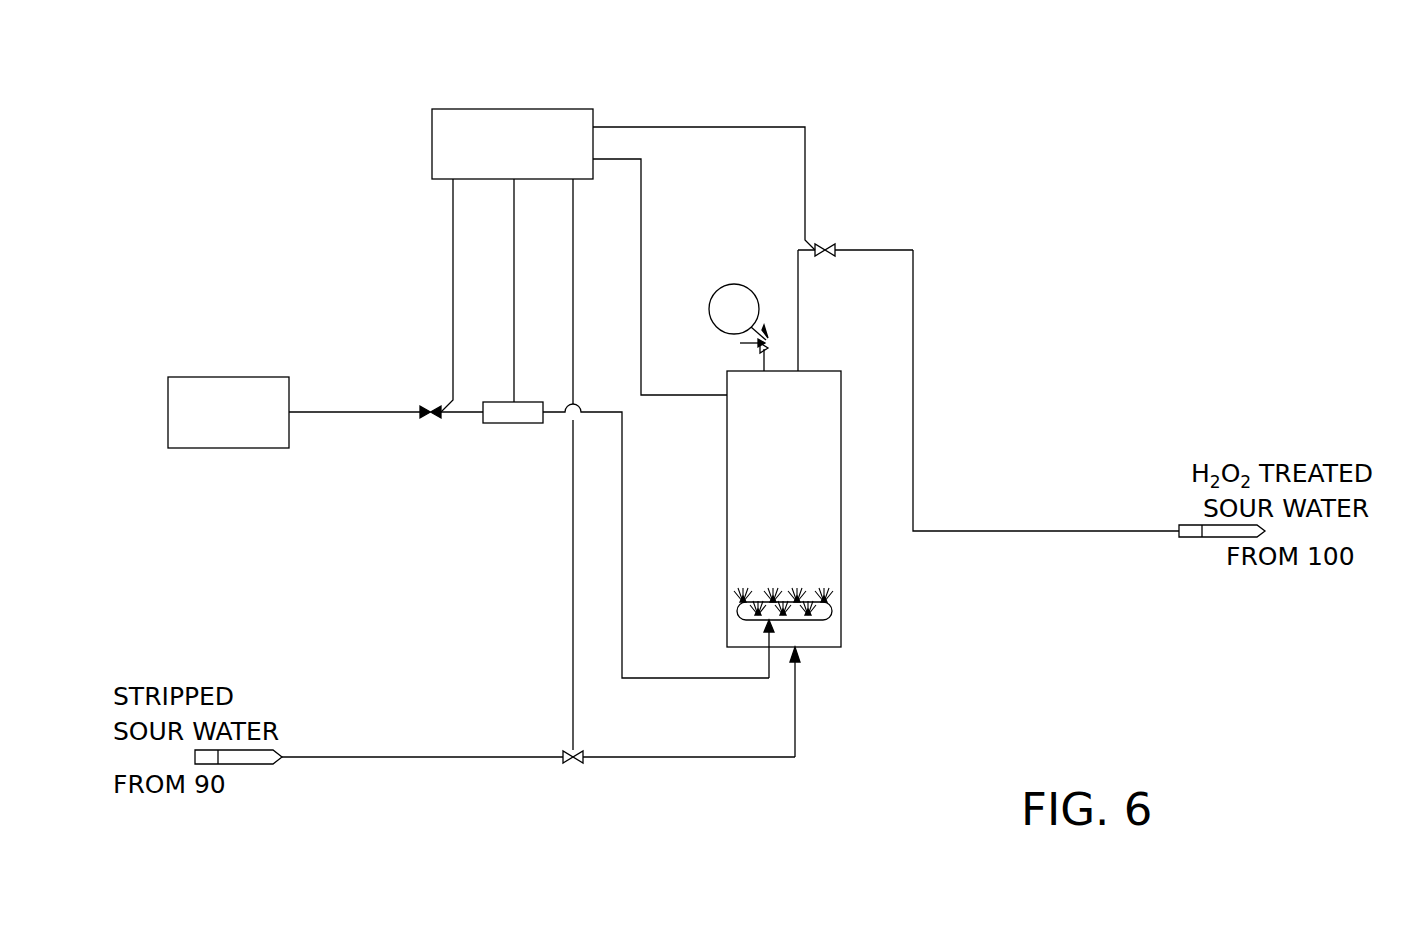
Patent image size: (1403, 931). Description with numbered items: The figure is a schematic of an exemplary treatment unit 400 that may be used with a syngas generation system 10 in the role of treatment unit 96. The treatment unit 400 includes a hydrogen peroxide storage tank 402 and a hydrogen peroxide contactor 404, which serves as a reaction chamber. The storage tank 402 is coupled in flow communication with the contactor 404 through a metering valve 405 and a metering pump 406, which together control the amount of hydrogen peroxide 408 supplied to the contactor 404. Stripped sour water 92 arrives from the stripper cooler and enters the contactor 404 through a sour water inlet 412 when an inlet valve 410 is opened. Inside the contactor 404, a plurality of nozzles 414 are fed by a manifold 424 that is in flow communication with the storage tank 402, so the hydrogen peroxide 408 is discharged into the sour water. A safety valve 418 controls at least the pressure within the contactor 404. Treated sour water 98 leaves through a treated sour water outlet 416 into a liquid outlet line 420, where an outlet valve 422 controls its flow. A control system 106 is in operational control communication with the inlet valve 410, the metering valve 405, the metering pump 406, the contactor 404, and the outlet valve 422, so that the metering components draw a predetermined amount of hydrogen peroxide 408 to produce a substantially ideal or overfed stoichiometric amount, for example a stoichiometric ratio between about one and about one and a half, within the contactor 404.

The syngas generation system 10 is at (1187, 113).
The treatment unit 96 is at (1195, 144).
The treatment unit 400 is at (1057, 127).
The control system 106 is at (512, 144).
The hydrogen peroxide storage tank 402 is at (228, 412).
The metering valve 405 is at (428, 405).
The metering pump 406 is at (492, 423).
The hydrogen peroxide 408 is at (314, 412).
The hydrogen peroxide contactor 404 is at (841, 580).
The nozzle 414 is at (737, 591).
The manifold 424 is at (815, 621).
The sour water inlet 412 is at (800, 660).
The inlet valve 410 is at (575, 763).
The stripped sour water 92 is at (330, 757).
The treated sour water outlet 416 is at (802, 370).
The safety valve 418 is at (710, 304).
The liquid outlet line 420 is at (915, 322).
The outlet valve 422 is at (828, 245).
The treated sour water 98 is at (1145, 531).